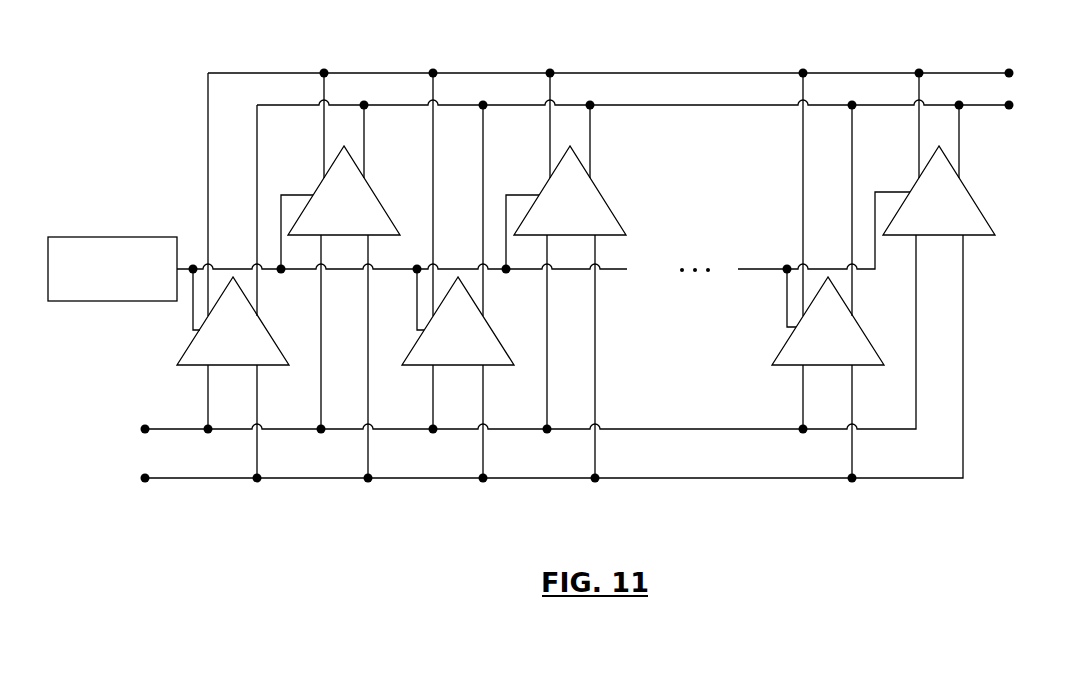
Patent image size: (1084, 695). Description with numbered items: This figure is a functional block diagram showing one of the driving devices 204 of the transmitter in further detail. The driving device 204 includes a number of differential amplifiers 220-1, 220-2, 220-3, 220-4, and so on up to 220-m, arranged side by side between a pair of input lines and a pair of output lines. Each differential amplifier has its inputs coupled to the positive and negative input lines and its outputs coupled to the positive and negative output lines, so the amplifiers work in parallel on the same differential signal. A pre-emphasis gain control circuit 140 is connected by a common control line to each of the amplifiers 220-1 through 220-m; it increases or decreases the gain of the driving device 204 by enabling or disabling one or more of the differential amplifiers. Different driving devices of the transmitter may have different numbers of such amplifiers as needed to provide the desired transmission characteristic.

The driving device 204 is at (788, 37).
The pre-emphasis gain control circuit 140 is at (115, 236).
The differential amplifier 220-1 is at (195, 338).
The differential amplifier 220-2 is at (368, 183).
The differential amplifier 220-3 is at (452, 366).
The differential amplifier 220-4 is at (597, 188).
The differential amplifier 220-m is at (969, 192).